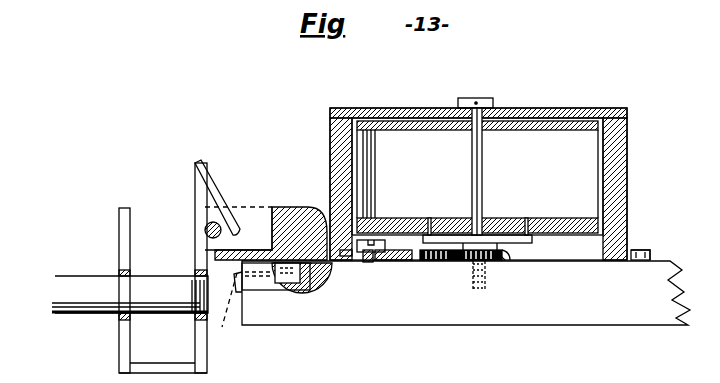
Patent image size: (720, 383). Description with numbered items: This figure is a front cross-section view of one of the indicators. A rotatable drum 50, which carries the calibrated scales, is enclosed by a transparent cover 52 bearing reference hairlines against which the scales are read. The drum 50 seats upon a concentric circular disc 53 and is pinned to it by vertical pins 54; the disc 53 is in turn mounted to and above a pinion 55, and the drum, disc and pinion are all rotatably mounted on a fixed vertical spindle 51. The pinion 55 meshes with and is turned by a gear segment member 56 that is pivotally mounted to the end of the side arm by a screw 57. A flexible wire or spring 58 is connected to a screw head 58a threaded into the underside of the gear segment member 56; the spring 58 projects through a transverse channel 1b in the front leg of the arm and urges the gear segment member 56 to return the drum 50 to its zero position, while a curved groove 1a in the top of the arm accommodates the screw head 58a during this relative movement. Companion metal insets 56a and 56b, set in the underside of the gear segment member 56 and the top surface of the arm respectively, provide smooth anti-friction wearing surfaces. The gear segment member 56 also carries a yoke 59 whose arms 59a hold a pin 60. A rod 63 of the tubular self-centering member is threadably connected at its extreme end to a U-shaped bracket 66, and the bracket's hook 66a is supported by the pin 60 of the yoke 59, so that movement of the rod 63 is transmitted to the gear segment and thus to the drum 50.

The curved groove 1a is at (462, 293).
The transverse channel 1b is at (226, 309).
The rotatable drum 50 is at (432, 128).
The fixed vertical spindle 51 is at (483, 186).
The transparent cover 52 is at (566, 106).
The concentric circular disc 53 is at (530, 239).
The vertical pins 54 is at (430, 220).
The pinion 55 is at (498, 258).
The gear segment member 56 is at (447, 262).
The metal inset 56a is at (367, 228).
The metal inset 56b is at (355, 264).
The screw 57 is at (372, 254).
The spring 58 is at (282, 290).
The screw head 58a is at (314, 289).
The yoke 59 is at (303, 212).
The yoke arm 59a is at (256, 214).
The pin 60 is at (222, 234).
The rod 63 is at (155, 282).
The U-shaped bracket 66 is at (129, 247).
The hook 66a is at (207, 180).